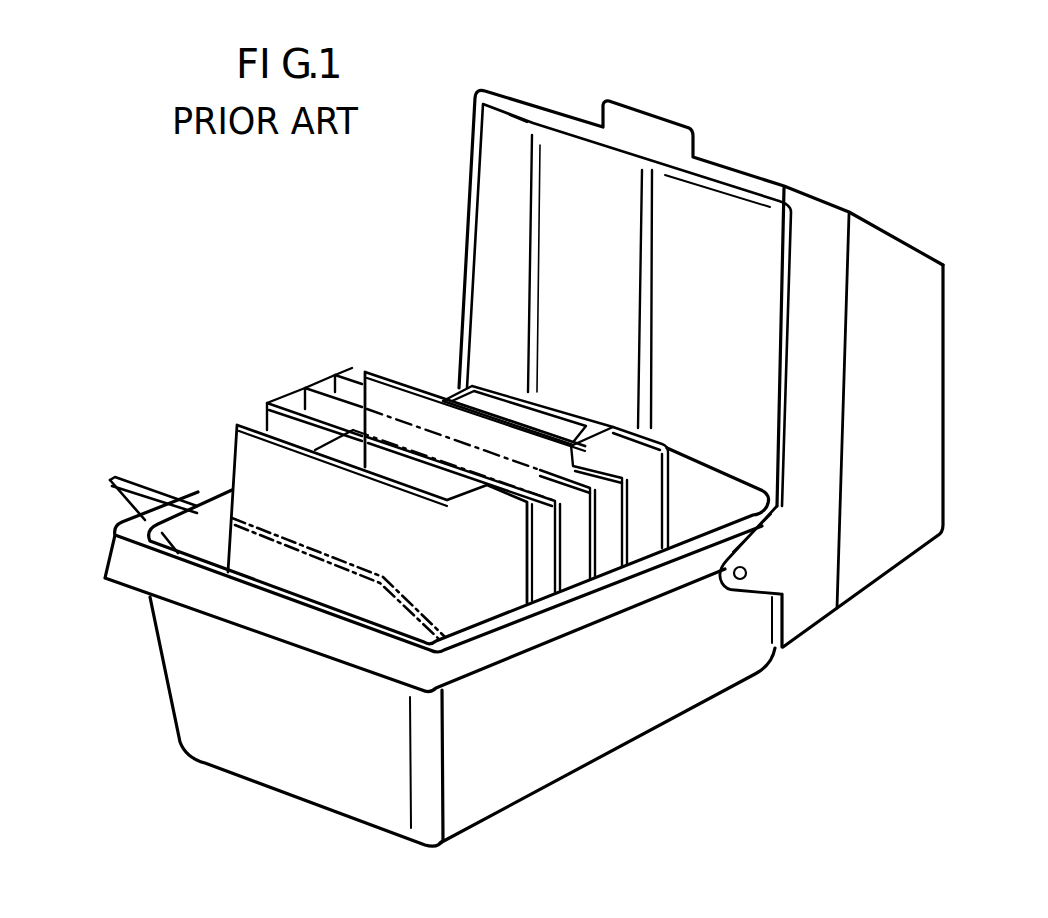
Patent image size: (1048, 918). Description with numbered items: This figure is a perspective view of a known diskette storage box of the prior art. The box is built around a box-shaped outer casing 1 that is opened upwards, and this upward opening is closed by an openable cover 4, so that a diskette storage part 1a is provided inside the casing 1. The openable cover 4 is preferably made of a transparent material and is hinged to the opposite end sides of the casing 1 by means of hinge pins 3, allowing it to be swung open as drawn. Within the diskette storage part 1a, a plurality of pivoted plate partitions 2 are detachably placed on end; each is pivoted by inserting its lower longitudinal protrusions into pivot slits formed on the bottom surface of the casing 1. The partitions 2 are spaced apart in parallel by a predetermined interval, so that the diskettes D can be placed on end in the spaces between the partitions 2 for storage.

The outer casing 1 is at (542, 737).
The diskette storage part 1a is at (260, 510).
The pivoted plate partition 2 is at (265, 456).
The hinge pin 3 is at (746, 573).
The openable cover 4 is at (923, 392).
The diskette D is at (612, 543).